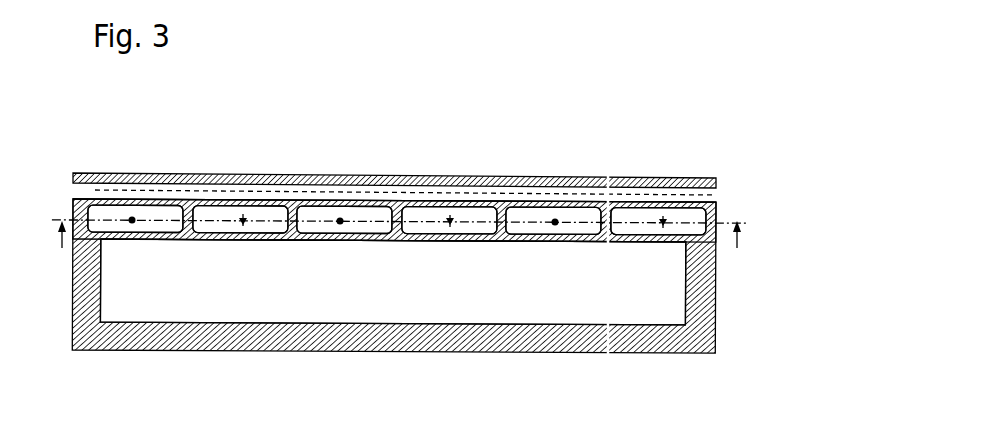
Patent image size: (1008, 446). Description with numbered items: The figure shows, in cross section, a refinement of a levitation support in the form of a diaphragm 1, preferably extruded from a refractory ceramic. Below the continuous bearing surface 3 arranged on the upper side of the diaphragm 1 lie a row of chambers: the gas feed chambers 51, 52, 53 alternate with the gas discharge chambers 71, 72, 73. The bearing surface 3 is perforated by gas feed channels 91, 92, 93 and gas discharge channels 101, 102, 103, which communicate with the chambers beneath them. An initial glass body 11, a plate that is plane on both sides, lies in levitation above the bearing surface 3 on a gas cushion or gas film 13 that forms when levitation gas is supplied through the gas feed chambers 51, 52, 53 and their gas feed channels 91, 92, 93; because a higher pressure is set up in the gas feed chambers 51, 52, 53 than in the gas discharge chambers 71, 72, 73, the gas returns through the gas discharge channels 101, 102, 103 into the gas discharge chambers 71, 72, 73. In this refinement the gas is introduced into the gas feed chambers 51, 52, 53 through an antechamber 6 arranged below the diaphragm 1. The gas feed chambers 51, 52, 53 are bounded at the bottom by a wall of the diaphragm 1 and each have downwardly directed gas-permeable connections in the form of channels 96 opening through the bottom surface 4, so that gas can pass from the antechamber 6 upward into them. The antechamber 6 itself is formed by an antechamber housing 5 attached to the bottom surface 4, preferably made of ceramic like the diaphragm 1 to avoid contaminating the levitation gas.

The diaphragm 1 is at (712, 162).
The continuous bearing surface 3 is at (148, 200).
The bottom surface 4 is at (177, 228).
The antechamber housing 5 is at (673, 353).
The antechamber 6 is at (392, 328).
The initial glass body 11 is at (394, 138).
The gas cushion or gas film 13 is at (103, 186).
The gas feed chamber 51 is at (122, 225).
The gas feed chamber 52 is at (318, 225).
The gas feed chamber 53 is at (525, 227).
The gas discharge chamber 71 is at (208, 227).
The gas discharge chamber 72 is at (417, 225).
The gas discharge chamber 73 is at (620, 228).
The gas feed channel 91 is at (132, 220).
The gas feed channel 92 is at (340, 220).
The gas feed channel 93 is at (555, 220).
The channels 96 is at (133, 232).
The gas discharge channel 101 is at (243, 214).
The gas discharge channel 102 is at (450, 215).
The gas discharge channel 103 is at (663, 216).